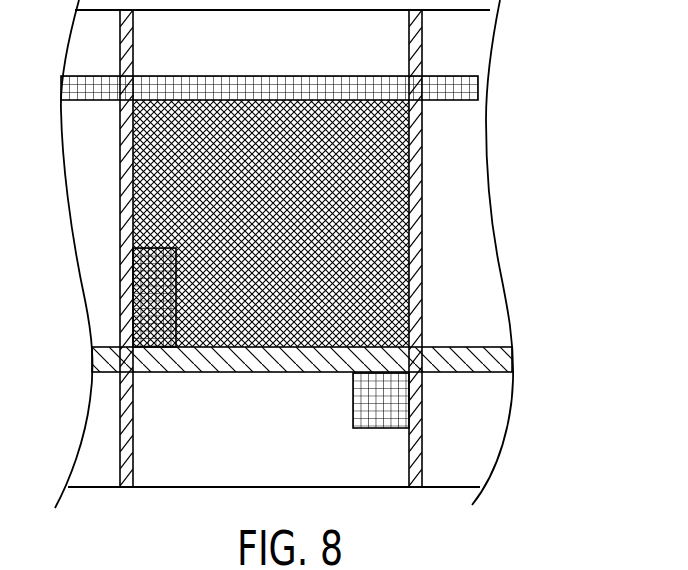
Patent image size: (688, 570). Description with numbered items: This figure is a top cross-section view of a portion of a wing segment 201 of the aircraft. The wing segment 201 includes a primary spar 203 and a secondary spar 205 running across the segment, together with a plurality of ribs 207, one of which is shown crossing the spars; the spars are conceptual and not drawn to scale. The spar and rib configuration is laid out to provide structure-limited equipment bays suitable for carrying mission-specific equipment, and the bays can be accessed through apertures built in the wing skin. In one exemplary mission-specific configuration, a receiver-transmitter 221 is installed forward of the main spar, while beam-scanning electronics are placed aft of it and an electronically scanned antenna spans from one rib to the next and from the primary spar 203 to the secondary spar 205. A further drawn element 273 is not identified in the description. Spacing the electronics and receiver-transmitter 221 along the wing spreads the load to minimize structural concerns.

The wing segment 201 is at (514, 146).
The primary spar 203 is at (497, 366).
The secondary spar 205 is at (470, 90).
The rib 207 is at (417, 222).
The receiver-transmitter 221 is at (387, 400).
The contact / storage region 273 is at (142, 283).